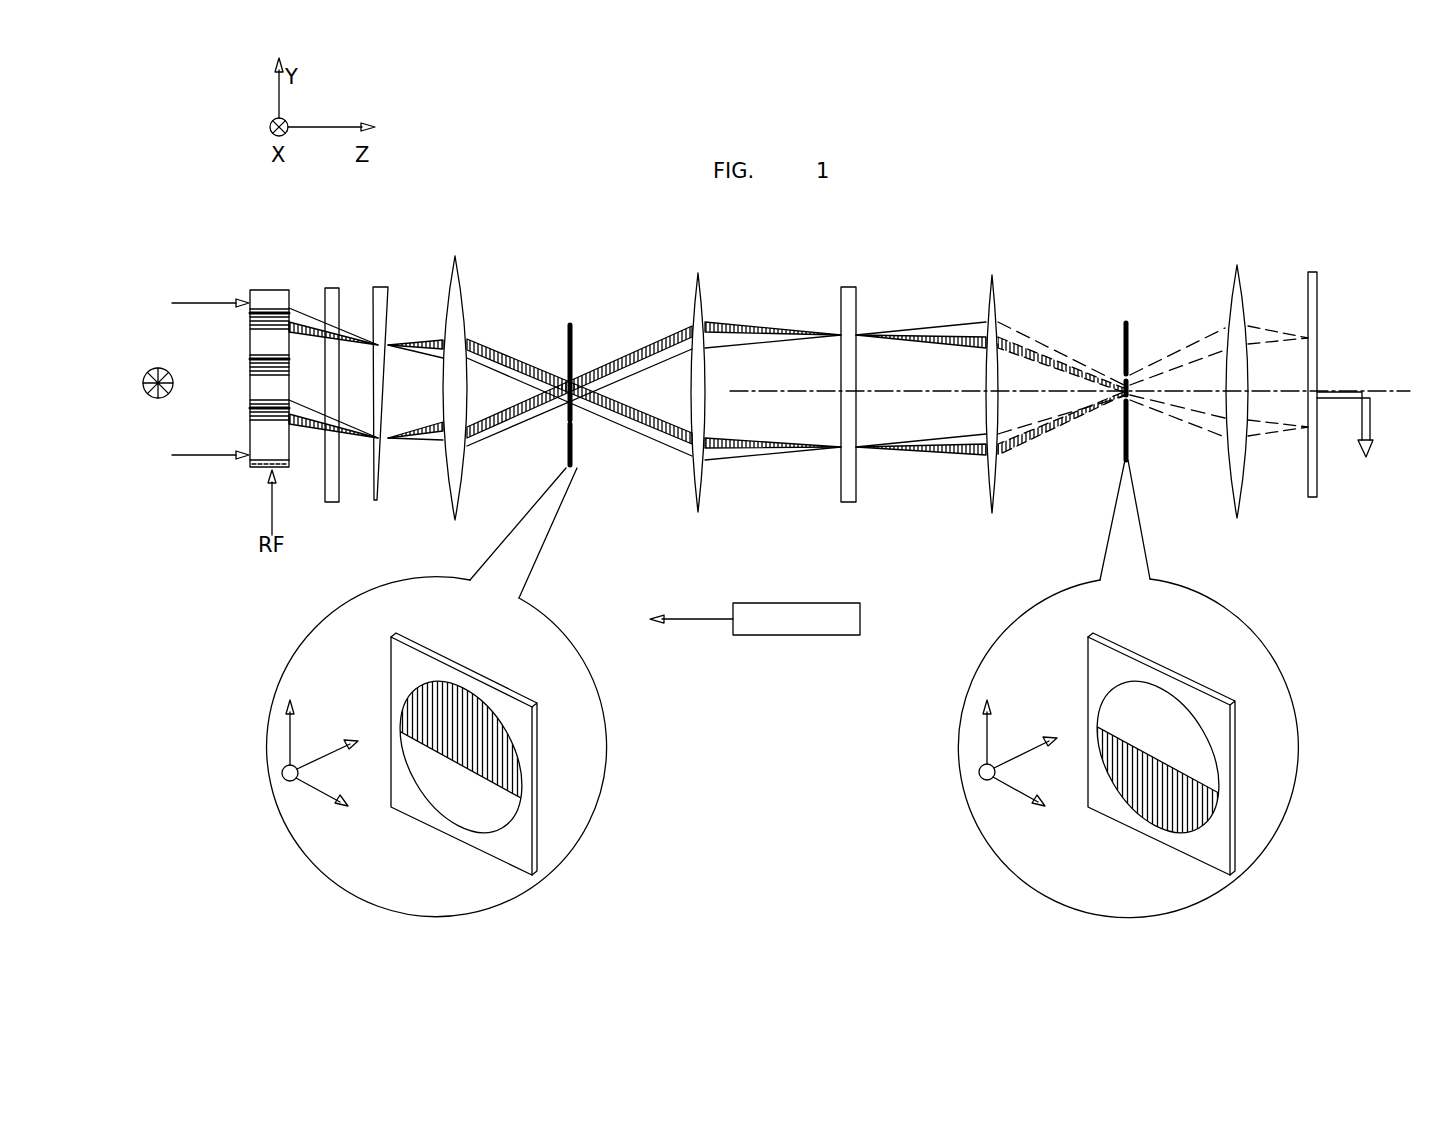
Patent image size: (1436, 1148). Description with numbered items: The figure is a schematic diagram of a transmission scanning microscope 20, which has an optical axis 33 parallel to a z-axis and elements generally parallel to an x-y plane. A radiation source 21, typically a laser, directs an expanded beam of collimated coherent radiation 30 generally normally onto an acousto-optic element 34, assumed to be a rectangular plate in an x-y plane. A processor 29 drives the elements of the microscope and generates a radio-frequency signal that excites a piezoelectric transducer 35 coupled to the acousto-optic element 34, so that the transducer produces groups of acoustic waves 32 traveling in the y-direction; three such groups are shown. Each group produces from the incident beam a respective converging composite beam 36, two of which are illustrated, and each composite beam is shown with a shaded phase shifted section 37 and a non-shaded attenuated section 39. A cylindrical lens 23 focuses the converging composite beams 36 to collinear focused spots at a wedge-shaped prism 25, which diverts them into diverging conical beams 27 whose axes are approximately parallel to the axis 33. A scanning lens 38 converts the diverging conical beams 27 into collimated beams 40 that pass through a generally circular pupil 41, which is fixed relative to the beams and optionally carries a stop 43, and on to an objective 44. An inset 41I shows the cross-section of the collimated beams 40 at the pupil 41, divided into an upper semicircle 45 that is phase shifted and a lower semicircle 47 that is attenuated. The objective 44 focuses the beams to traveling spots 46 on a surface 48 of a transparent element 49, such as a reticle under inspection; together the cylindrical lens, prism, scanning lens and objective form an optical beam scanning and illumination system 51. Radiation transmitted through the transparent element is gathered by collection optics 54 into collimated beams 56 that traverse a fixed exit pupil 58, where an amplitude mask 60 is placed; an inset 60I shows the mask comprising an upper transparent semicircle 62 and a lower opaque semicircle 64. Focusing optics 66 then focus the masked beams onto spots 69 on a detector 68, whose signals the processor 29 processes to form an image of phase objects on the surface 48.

The transmission scanning microscope 20 is at (258, 607).
The radiation source 21 is at (155, 400).
The cylindrical lens 23 is at (332, 503).
The wedge-shaped prism 25 is at (380, 501).
The diverging conical beams 27 is at (416, 340).
The processor 29 is at (765, 636).
The beam of collimated coherent radiation 30 is at (213, 261).
The groups of acoustic waves 32 is at (250, 318).
The axis 33 is at (1364, 391).
The acousto-optic element 34 is at (283, 290).
The piezoelectric transducer 35 is at (262, 466).
The converging composite beam 36 is at (296, 328).
The phase shifted section 37 is at (488, 345).
The scanning lens 38 is at (457, 262).
The attenuated section 39 is at (485, 437).
The collimated beams 40 is at (524, 362).
The pupil 41 is at (586, 347).
The inset 41I is at (283, 816).
The stop 43 is at (575, 448).
The objective 44 is at (703, 280).
The upper semicircle 45 is at (400, 660).
The traveling spots 46 is at (826, 297).
The lower semicircle 47 is at (437, 797).
The surface 48 is at (838, 468).
The transparent element 49 is at (851, 503).
The optical beam scanning and illumination system 51 is at (583, 223).
The collection optics 54 is at (999, 282).
The collimated beams 56 is at (1049, 467).
The fixed exit pupil 58 is at (1156, 438).
The amplitude mask 60 is at (1130, 330).
The inset 60I is at (981, 818).
The upper transparent semicircle 62 is at (1201, 752).
The lower opaque semicircle 64 is at (1135, 797).
The focusing optics 66 is at (1240, 268).
The detector 68 is at (1320, 484).
The spots 69 is at (1314, 338).